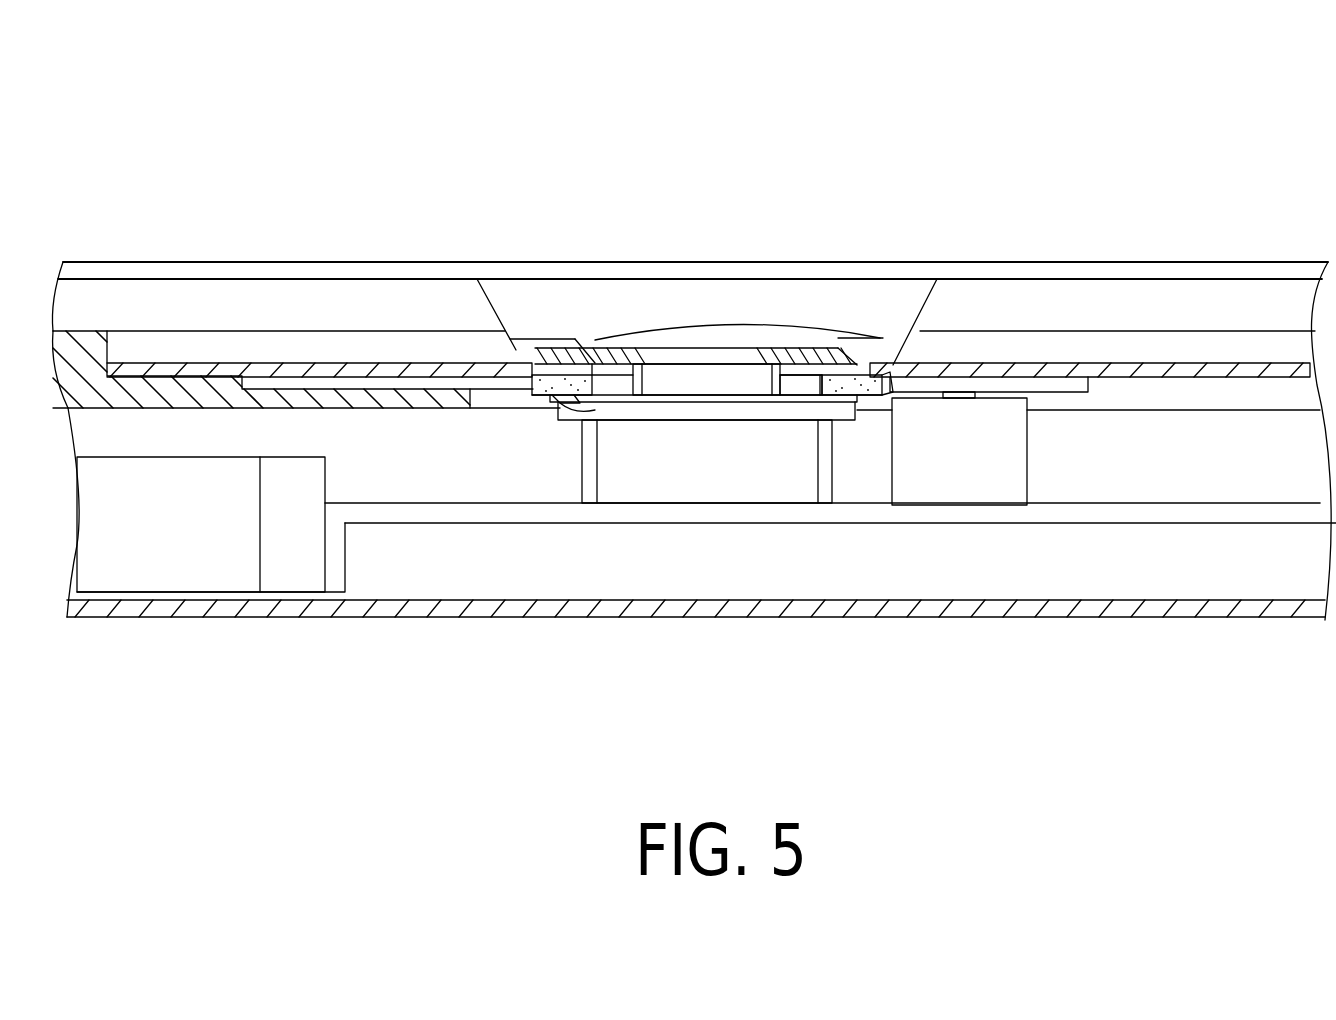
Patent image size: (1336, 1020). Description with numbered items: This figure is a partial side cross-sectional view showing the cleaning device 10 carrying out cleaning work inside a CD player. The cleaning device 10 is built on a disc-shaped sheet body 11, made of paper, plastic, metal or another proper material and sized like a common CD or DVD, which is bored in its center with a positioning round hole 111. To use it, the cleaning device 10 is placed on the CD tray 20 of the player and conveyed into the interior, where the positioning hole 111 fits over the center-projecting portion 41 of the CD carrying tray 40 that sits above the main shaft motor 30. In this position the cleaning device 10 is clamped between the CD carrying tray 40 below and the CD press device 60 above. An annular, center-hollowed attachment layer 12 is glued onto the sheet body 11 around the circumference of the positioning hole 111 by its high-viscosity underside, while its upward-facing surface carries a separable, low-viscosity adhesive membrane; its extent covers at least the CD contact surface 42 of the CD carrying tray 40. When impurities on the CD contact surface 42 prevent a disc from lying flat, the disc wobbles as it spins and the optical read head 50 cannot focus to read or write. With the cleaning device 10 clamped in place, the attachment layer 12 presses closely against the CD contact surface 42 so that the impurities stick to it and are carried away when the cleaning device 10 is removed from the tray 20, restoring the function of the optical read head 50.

The cleaning device 10 is at (340, 362).
The sheet body 11 is at (423, 368).
The positioning round hole 111 is at (605, 358).
The attachment layer 12 is at (886, 388).
The CD tray 20 is at (185, 408).
The main shaft motor 30 is at (581, 462).
The CD carrying tray 40 is at (800, 393).
The center-projecting portion 41 is at (720, 358).
The CD contact surface 42 is at (577, 376).
The optical read head 50 is at (1040, 457).
The CD press device 60 is at (926, 303).